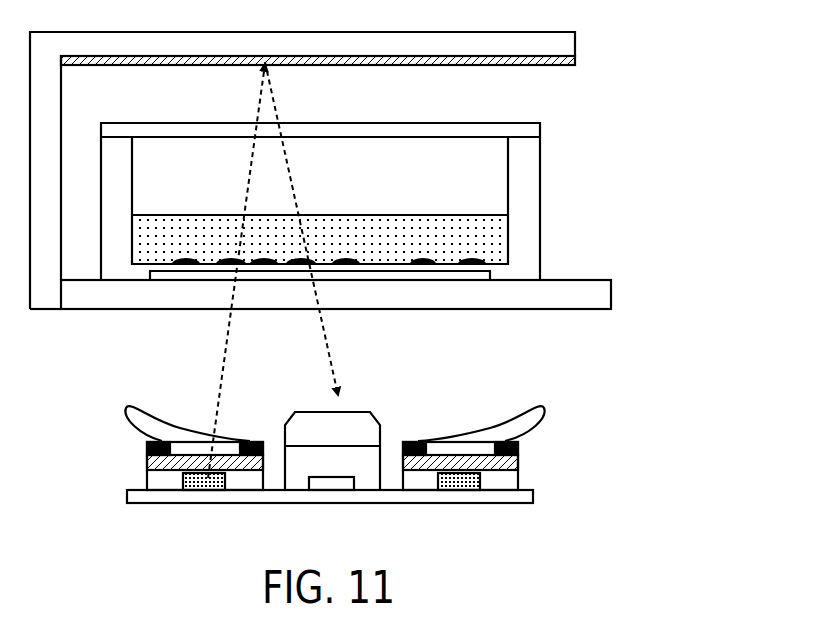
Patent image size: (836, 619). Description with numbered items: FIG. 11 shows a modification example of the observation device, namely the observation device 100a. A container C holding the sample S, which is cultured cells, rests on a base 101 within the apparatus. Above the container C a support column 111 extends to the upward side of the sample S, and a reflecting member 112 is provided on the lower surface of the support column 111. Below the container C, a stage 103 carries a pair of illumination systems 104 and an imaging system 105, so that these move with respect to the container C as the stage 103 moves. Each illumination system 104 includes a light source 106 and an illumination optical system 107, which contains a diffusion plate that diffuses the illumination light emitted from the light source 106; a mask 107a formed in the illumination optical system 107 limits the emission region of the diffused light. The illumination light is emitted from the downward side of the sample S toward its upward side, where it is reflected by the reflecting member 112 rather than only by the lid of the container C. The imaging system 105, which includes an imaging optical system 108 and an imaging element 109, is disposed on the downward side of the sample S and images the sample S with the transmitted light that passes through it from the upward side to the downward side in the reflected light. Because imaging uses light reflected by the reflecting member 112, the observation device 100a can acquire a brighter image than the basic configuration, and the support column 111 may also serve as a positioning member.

The observation device 100a is at (754, 68).
The base plate 101 is at (598, 280).
The stage 103 is at (532, 495).
The illumination system 104 is at (155, 414).
The imaging system 105 is at (322, 392).
The light source 106 is at (147, 473).
The illumination optical system 107 is at (147, 460).
The mask 107a is at (504, 410).
The imaging optical system 108 is at (331, 434).
The imaging element 109 is at (358, 488).
The support column 111 is at (575, 42).
The reflecting member 112 is at (565, 63).
The container C is at (543, 200).
The sample S is at (310, 262).